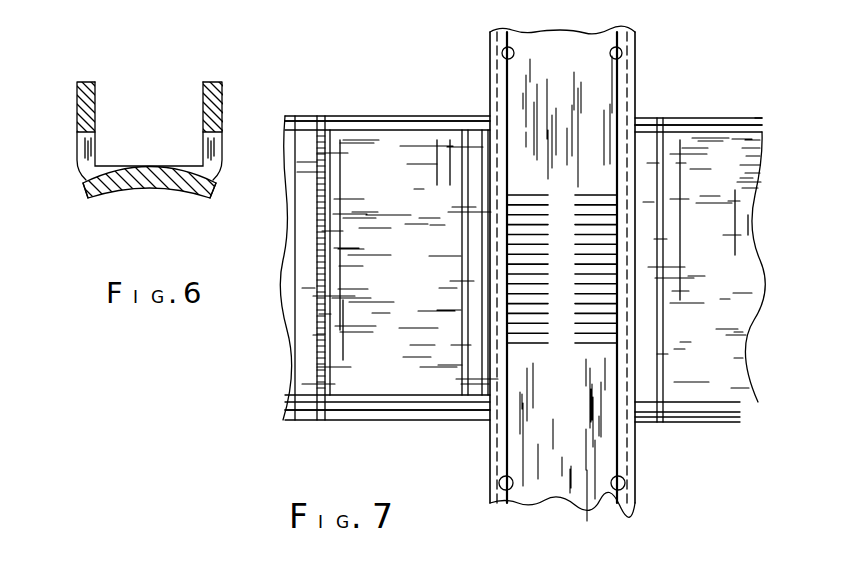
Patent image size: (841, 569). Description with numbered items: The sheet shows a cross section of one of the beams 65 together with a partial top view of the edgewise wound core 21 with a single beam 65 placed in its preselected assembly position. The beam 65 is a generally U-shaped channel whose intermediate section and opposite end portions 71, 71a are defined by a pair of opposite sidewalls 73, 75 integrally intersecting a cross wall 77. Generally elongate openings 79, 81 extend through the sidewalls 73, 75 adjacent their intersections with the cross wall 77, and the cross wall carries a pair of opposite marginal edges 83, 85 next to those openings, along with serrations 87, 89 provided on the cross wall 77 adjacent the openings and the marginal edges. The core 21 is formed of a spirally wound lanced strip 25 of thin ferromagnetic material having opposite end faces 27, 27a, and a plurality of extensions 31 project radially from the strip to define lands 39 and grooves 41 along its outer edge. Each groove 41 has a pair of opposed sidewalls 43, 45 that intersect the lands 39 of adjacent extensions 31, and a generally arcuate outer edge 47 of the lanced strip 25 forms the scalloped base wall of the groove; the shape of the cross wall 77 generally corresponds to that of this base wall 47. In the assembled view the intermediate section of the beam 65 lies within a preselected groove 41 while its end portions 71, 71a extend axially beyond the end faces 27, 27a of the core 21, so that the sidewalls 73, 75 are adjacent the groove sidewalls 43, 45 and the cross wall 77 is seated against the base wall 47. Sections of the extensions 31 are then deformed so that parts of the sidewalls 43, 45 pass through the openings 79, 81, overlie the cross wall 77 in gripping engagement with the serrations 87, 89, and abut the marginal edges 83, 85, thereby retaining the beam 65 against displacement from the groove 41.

In FIG. 7, the edgewise wound core 21 is at (256, 417).
In FIG. 7, the lanced strip 25 is at (737, 363).
In FIG. 7, the end face 27 is at (720, 427).
In FIG. 7, the end face 27a is at (737, 118).
In FIG. 7, the extension 31 is at (295, 303).
In FIG. 7, the land 39 is at (306, 116).
In FIG. 7, the groove 41 is at (380, 130).
In FIG. 7, the opposed sidewall 43 is at (487, 134).
In FIG. 7, the opposed sidewall 45 is at (465, 407).
In FIG. 7, the arcuate outer edge 47 is at (388, 410).
In FIG. 6, the beam 65 is at (141, 93).
In FIG. 7, the end portion 71 is at (557, 505).
In FIG. 7, the end portion 71a is at (535, 32).
In FIG. 6, the opposite sidewall 73 is at (85, 80).
In FIG. 7, the opposite sidewall 73 is at (492, 497).
In FIG. 6, the opposite sidewall 75 is at (212, 80).
In FIG. 7, the opposite sidewall 75 is at (633, 505).
In FIG. 6, the cross wall 77 is at (193, 197).
In FIG. 7, the cross wall 77 is at (578, 490).
In FIG. 6, the opening 79 is at (90, 133).
In FIG. 7, the opening 79 is at (490, 480).
In FIG. 6, the opening 81 is at (213, 135).
In FIG. 7, the opening 81 is at (640, 486).
In FIG. 6, the marginal edge 83 is at (86, 199).
In FIG. 7, the marginal edge 83 is at (500, 243).
In FIG. 6, the marginal edge 85 is at (213, 200).
In FIG. 7, the marginal edge 85 is at (634, 243).
In FIG. 7, the serration 87 is at (530, 343).
In FIG. 7, the serration 89 is at (595, 343).